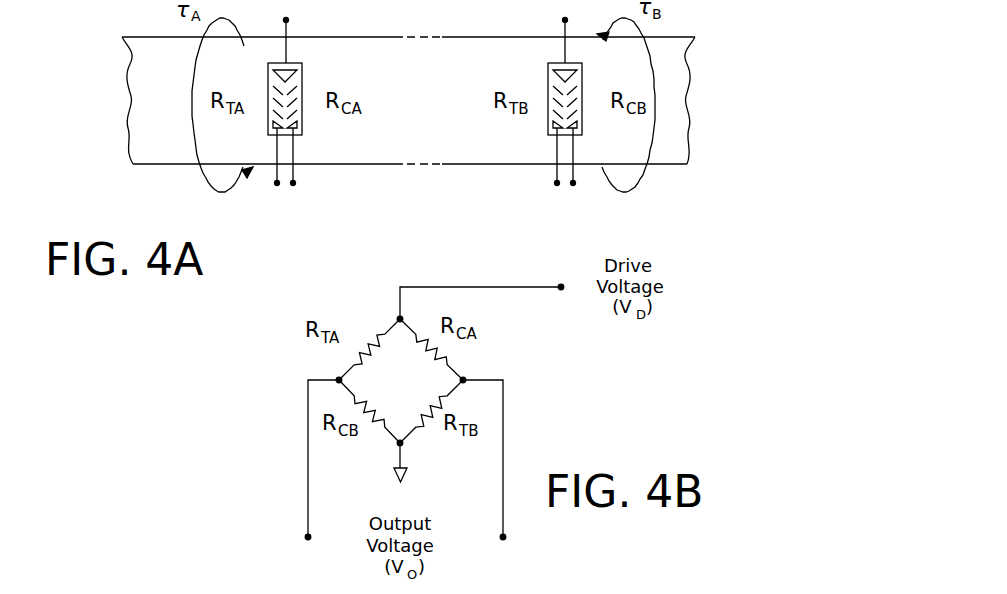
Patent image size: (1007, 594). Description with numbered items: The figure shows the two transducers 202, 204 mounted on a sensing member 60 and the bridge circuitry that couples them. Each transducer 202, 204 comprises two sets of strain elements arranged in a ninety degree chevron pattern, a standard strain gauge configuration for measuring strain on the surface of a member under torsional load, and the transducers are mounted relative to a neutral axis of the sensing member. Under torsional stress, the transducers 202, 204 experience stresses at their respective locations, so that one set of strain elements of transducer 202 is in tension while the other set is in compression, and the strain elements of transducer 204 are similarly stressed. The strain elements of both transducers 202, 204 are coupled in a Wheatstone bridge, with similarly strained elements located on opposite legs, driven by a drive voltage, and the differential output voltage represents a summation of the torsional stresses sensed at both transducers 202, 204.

The substrate 60 is at (178, 116).
The transducer 202 is at (293, 63).
The transducer 204 is at (558, 63).